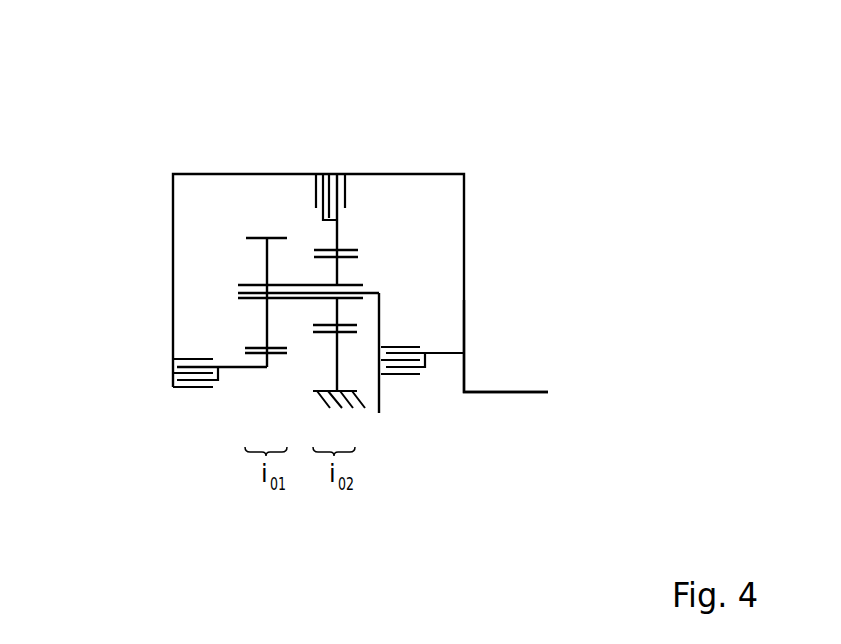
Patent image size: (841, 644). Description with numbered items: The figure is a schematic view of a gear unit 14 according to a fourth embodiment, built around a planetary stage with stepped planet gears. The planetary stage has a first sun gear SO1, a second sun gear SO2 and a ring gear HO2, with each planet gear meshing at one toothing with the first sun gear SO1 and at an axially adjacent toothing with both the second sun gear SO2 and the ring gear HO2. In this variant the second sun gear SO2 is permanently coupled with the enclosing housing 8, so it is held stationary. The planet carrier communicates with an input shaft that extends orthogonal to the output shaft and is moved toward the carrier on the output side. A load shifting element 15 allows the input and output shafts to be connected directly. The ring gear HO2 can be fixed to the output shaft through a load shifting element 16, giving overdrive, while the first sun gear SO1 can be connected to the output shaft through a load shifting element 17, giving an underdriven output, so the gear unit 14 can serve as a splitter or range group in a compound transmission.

The gear unit 14 is at (133, 142).
The load shifting element 16 is at (330, 174).
The ring gear HO2 is at (346, 250).
The load shifting element 17 is at (168, 372).
The first sun gear SO1 is at (275, 355).
The second sun gear SO2 is at (328, 337).
The housing 8 is at (360, 403).
The load shifting element 15 is at (410, 377).